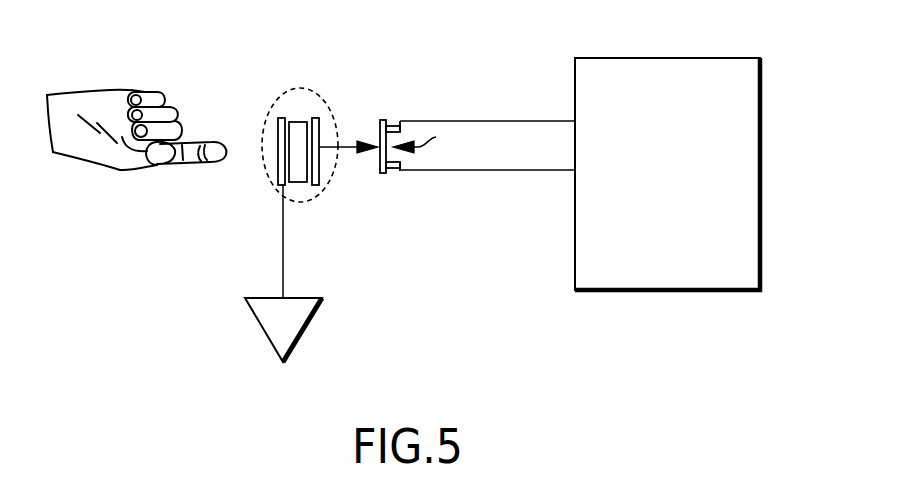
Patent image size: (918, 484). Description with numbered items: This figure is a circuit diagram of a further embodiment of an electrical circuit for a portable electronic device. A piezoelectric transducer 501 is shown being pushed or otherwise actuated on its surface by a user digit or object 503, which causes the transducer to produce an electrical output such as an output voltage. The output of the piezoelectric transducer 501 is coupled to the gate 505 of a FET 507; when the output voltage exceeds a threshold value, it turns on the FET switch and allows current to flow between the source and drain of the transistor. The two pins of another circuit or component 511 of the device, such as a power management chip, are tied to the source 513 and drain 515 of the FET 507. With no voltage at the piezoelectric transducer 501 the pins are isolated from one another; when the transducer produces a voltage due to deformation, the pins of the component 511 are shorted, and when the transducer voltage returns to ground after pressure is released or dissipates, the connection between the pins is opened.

The piezoelectric transducer 501 is at (271, 182).
The user digit or object 503 is at (110, 90).
The gate 505 is at (364, 141).
The FET 507 is at (434, 139).
The other circuit or component 511 is at (725, 57).
The source 513 is at (398, 123).
The drain 515 is at (395, 174).